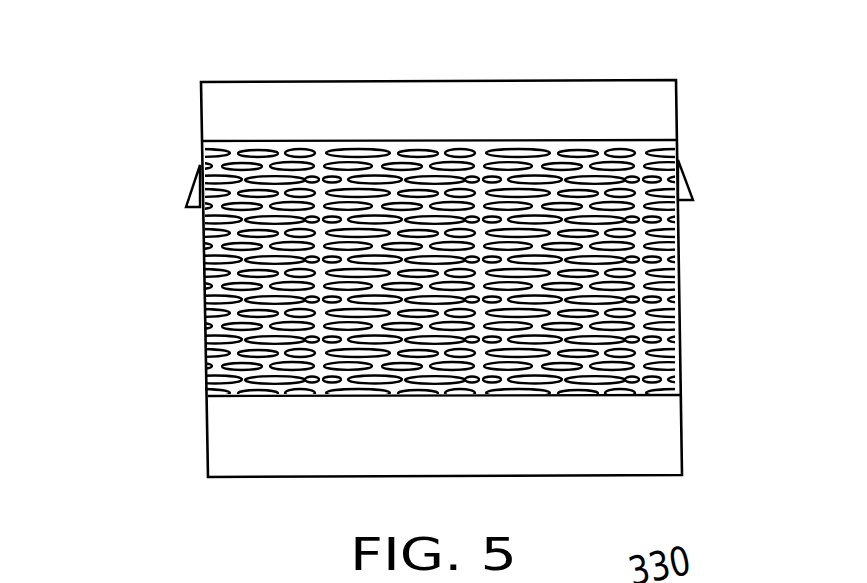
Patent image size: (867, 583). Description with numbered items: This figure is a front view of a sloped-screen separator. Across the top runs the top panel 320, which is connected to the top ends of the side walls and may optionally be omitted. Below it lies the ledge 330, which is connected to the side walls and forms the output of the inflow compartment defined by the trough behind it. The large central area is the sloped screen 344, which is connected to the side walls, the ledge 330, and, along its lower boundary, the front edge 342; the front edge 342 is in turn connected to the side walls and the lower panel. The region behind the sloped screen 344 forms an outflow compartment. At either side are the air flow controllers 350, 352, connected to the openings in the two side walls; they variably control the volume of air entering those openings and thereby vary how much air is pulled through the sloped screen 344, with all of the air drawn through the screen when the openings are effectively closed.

The top panel 320 is at (475, 80).
The ledge 330 is at (572, 140).
The front edge 342 is at (455, 456).
The sloped screen 344 is at (205, 297).
The air flow controller 350 is at (688, 173).
The air flow controller 352 is at (187, 195).